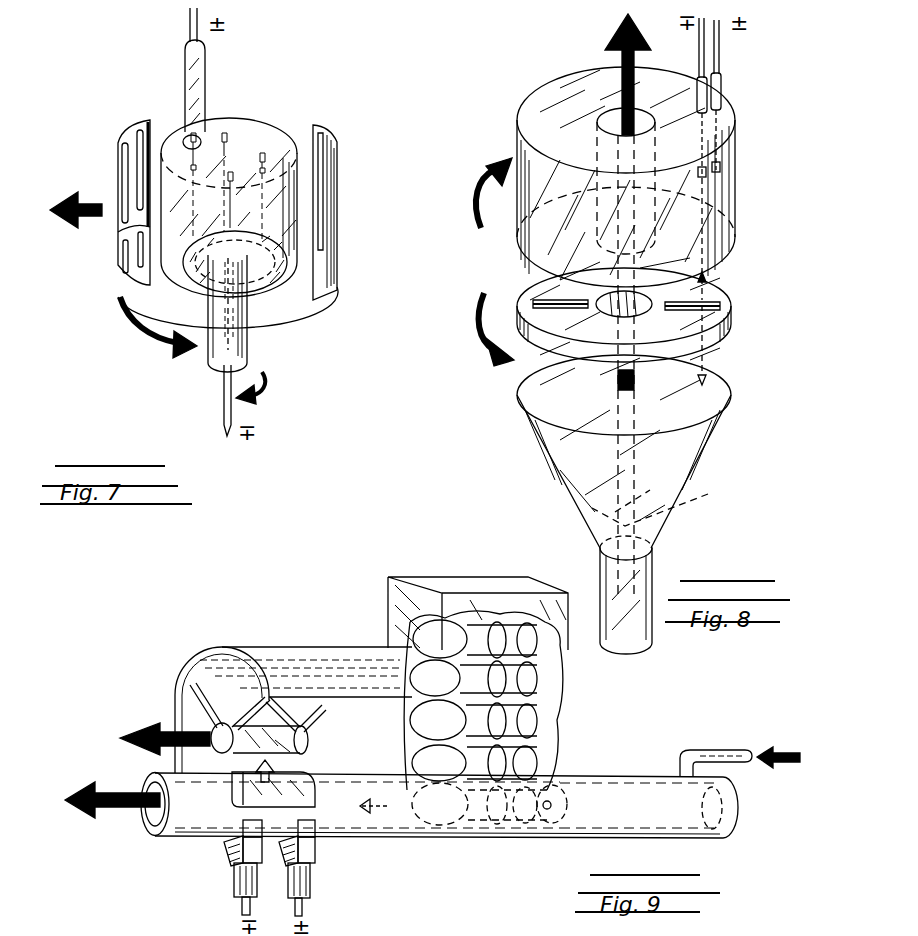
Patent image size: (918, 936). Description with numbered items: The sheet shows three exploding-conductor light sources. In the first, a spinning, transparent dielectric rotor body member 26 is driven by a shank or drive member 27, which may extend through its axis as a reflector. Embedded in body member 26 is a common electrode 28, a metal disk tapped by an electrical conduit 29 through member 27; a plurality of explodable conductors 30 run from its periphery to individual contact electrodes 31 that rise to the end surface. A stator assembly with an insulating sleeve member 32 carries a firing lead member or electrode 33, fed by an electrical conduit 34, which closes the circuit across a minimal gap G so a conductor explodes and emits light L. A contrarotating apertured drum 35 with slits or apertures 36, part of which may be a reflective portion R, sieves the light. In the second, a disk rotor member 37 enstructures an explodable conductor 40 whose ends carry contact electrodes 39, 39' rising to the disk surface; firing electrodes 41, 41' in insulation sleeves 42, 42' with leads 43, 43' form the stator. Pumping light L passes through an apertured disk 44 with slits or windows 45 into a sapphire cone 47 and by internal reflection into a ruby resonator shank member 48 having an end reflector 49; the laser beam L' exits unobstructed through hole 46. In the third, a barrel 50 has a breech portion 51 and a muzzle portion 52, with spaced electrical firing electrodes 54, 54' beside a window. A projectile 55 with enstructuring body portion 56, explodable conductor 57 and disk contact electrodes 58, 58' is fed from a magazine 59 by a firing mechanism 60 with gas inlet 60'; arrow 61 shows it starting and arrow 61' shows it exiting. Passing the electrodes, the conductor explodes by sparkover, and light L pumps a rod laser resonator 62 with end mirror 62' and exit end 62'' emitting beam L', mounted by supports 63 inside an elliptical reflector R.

In FIG. 7, the spinning rotor enstructuring body member 26 is at (284, 264).
In FIG. 7, the shank or drive member 27 is at (249, 348).
In FIG. 7, the common electrode 28 is at (244, 280).
In FIG. 7, the electrical conduit 29 is at (234, 410).
In FIG. 7, the explodable conductor 30 is at (263, 215).
In FIG. 7, the contact electrode 31 is at (266, 156).
In FIG. 7, the insulating sleeve member 32 is at (208, 68).
In FIG. 7, the firing lead member or electrode 33 is at (186, 140).
In FIG. 7, the electrical conduit 34 is at (188, 23).
In FIG. 7, the contrarotating apertured drum 35 is at (126, 285).
In FIG. 7, the slits or apertures 36 is at (120, 228).
In FIG. 8, the disk rotor member 37 is at (715, 236).
In FIG. 8, the electrical contact electrode 39 is at (754, 158).
In FIG. 8, the electrical contact electrode 39' is at (753, 165).
In FIG. 8, the explodable conductor 40 is at (710, 175).
In FIG. 8, the firing electrode 41 is at (750, 130).
In FIG. 8, the firing electrode 41' is at (681, 145).
In FIG. 8, the insulation sleeve 42 is at (748, 89).
In FIG. 8, the insulation sleeve 42' is at (682, 99).
In FIG. 8, the lead 43 is at (739, 47).
In FIG. 8, the lead 43' is at (681, 48).
In FIG. 8, the apertured disk 44 is at (722, 340).
In FIG. 8, the slits or windows 45 is at (722, 310).
In FIG. 8, the hole 46 is at (640, 310).
In FIG. 8, the cone 47 is at (722, 400).
In FIG. 8, the resonator shank member 48 is at (645, 572).
In FIG. 8, the end reflector 49 is at (632, 646).
In FIG. 9, the barrel 50 is at (385, 832).
In FIG. 9, the breech portion 51 is at (440, 797).
In FIG. 9, the muzzle portion 52 is at (150, 830).
In FIG. 9, the electrical firing electrode 54 is at (320, 868).
In FIG. 9, the electrical firing electrode 54' is at (225, 867).
In FIG. 9, the projectile or bullet 55 is at (520, 672).
In FIG. 9, the enstructuring body portion 56 is at (480, 670).
In FIG. 9, the explodable conductor 57 is at (548, 718).
In FIG. 9, the contact electrode 58 is at (528, 756).
In FIG. 9, the contact electrode 58' is at (439, 763).
In FIG. 9, the magazine 59 is at (405, 600).
In FIG. 9, the firing mechanism 60 is at (681, 760).
In FIG. 9, the inlet 60' is at (778, 739).
In FIG. 9, the arrow 61 is at (310, 795).
In FIG. 9, the arrow 61' is at (95, 800).
In FIG. 9, the laser resonator 62 is at (295, 712).
In FIG. 9, the end mirror 62' is at (328, 736).
In FIG. 9, the exit end 62'' is at (174, 720).
In FIG. 9, the supports 63 is at (215, 730).
In FIG. 7, the light L is at (69, 208).
In FIG. 8, the light L is at (637, 384).
In FIG. 9, the light L is at (295, 767).
In FIG. 8, the laser beam L' is at (603, 270).
In FIG. 9, the laser beam L' is at (151, 739).
In FIG. 7, the minimal gap G is at (205, 147).
In FIG. 8, the minimal gap G is at (716, 122).
In FIG. 7, the reflector R is at (300, 200).
In FIG. 9, the reflector R is at (270, 655).